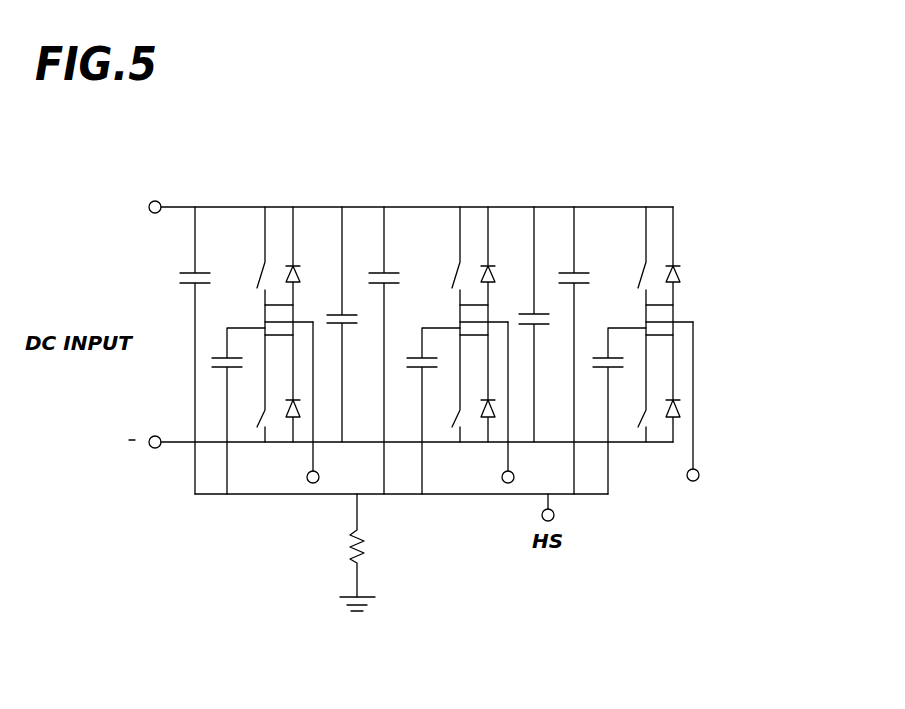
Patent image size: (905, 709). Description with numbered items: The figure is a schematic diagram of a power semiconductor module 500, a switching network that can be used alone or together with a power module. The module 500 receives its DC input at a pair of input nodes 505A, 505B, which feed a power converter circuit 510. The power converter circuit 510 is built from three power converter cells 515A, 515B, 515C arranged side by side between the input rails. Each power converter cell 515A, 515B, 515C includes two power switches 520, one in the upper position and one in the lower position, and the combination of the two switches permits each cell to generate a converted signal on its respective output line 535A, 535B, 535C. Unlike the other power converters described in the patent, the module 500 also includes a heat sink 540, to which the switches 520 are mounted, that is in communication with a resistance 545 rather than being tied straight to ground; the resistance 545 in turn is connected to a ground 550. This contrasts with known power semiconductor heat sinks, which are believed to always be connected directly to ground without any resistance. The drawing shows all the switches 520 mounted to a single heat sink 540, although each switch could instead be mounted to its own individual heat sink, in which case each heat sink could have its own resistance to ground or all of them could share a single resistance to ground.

The power semiconductor module 500 is at (610, 151).
The input node 505A is at (155, 200).
The input node 505B is at (155, 449).
The power converter circuit 510 is at (424, 201).
The power converter cell 515A is at (273, 465).
The power converter cell 515B is at (460, 457).
The power converter cell 515C is at (658, 458).
The power switch 520 is at (705, 390).
The line 535A is at (315, 458).
The line 535B is at (512, 460).
The line 535C is at (693, 455).
The heat sink 540 is at (572, 540).
The resistance 545 is at (365, 545).
The ground 550 is at (357, 612).